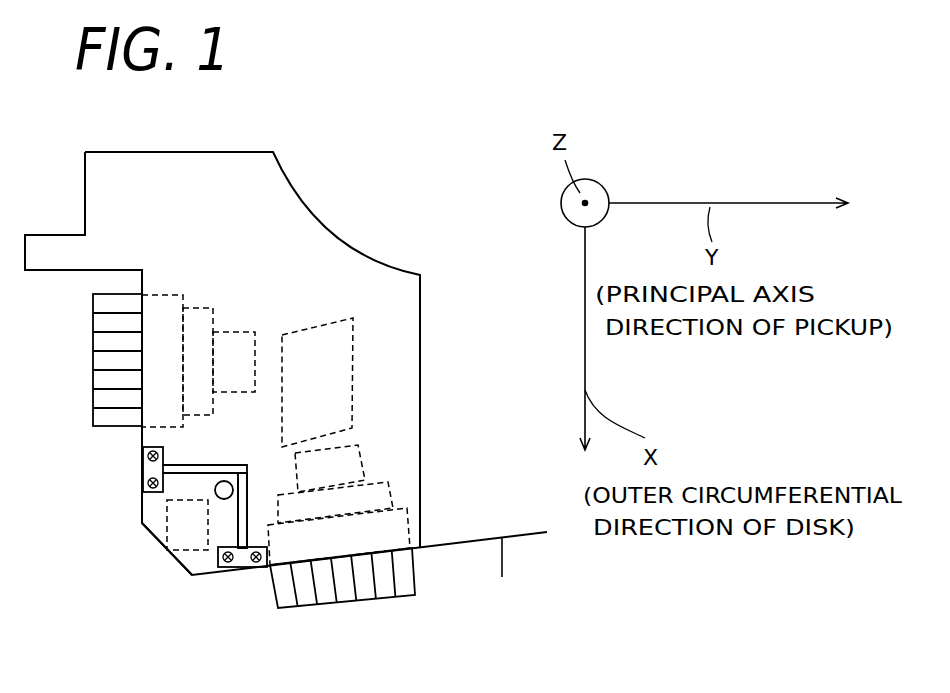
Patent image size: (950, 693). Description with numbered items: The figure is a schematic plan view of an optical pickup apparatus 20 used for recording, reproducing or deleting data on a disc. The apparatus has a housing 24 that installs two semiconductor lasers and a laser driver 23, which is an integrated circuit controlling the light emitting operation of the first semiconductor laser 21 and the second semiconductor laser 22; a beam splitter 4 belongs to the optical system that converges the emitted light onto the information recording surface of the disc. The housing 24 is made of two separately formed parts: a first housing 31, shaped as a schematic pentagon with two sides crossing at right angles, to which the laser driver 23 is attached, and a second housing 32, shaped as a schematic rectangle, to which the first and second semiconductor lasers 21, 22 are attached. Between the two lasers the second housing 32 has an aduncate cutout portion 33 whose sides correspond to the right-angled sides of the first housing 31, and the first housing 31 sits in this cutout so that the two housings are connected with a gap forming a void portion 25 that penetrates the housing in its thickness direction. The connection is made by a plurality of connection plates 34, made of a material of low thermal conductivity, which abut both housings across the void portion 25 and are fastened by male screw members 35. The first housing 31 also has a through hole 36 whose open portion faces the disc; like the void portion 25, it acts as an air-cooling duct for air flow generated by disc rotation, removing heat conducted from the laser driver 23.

The optical pickup apparatus 20 is at (300, 64).
The housing 24 is at (353, 200).
The second housing 32 is at (190, 168).
The first semiconductor laser 21 is at (163, 292).
The beam splitter 4 is at (315, 338).
The first housing 31 is at (152, 517).
The laser driver 23 is at (166, 556).
The second semiconductor laser 22 is at (415, 520).
The void portion 25 is at (195, 465).
The cutout portion 33 is at (238, 465).
The connection plate 34 is at (143, 468).
The male screw member 35 is at (143, 487).
The through hole 36 is at (224, 499).